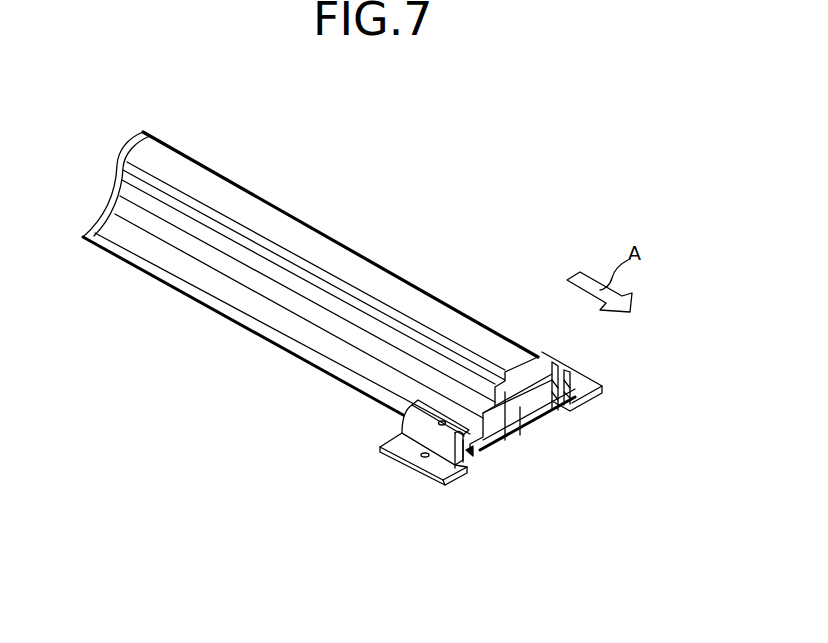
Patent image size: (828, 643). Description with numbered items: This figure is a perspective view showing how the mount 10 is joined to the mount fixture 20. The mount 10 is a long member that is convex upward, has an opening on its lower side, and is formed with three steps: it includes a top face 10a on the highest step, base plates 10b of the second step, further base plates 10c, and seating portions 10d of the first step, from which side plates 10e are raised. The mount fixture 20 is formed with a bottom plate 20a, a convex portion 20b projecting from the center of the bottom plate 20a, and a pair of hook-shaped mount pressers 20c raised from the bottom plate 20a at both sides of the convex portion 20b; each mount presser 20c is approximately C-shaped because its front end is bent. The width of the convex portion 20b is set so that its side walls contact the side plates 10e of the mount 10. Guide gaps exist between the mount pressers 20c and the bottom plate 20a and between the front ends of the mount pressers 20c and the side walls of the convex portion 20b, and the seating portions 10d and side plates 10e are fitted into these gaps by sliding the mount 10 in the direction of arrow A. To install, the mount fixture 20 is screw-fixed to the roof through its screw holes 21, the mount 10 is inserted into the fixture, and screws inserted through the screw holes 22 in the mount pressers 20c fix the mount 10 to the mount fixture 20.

The mount 10 is at (310, 283).
The top face 10a is at (290, 238).
The base plates 10b is at (173, 200).
The base plates 10c is at (212, 253).
The seating portions 10d is at (220, 308).
The side plates 10e is at (300, 336).
The mount fixture 20 is at (549, 438).
The bottom plate 20a is at (595, 392).
The convex portion 20b is at (532, 405).
The mount pressers 20c is at (456, 470).
The screw holes 21 is at (423, 457).
The screw holes 22 is at (418, 424).